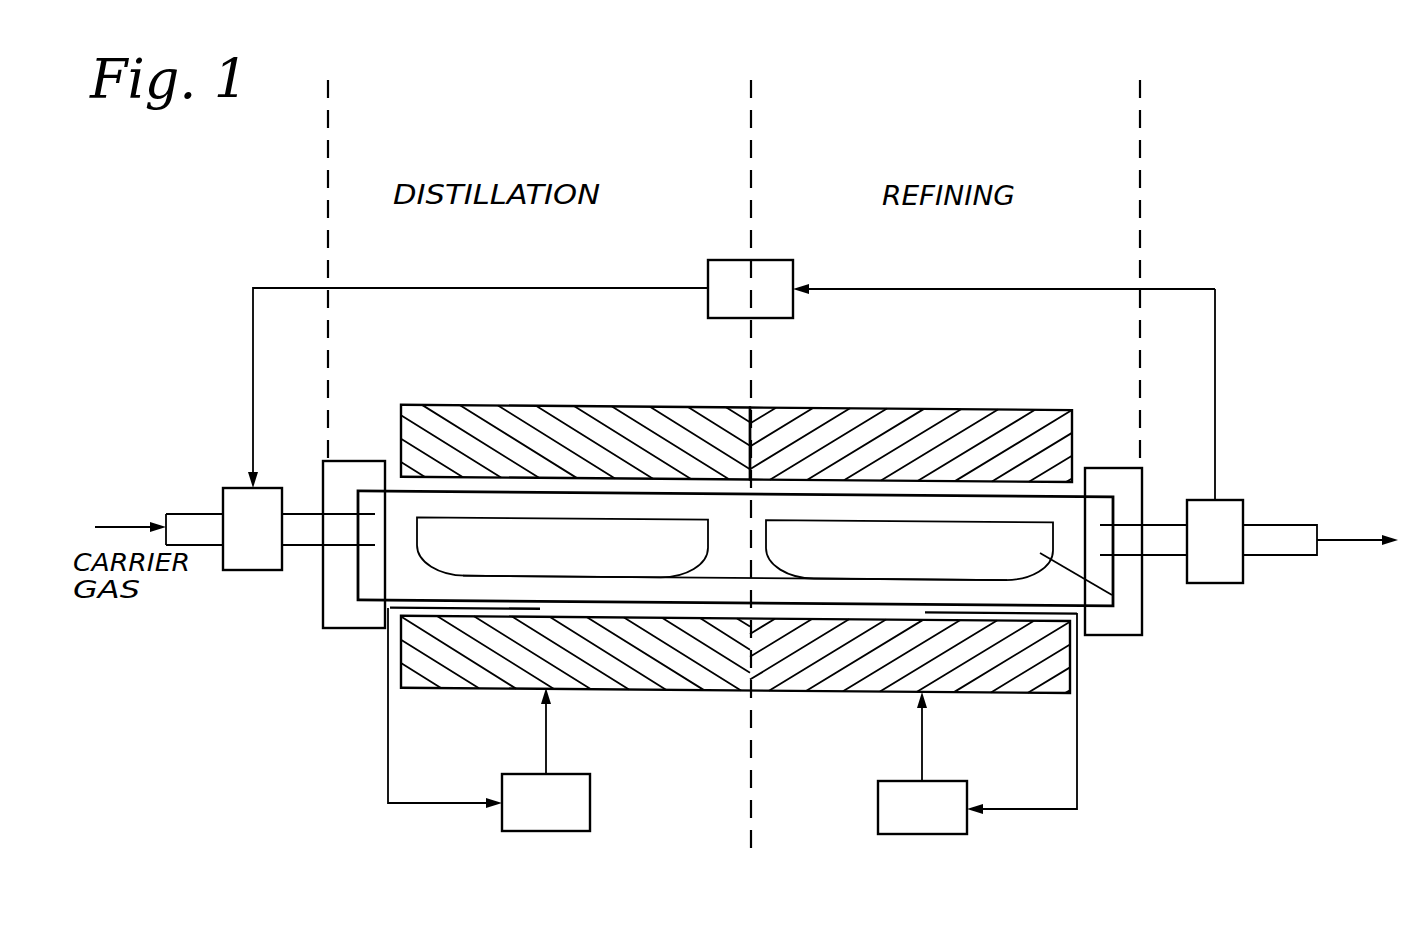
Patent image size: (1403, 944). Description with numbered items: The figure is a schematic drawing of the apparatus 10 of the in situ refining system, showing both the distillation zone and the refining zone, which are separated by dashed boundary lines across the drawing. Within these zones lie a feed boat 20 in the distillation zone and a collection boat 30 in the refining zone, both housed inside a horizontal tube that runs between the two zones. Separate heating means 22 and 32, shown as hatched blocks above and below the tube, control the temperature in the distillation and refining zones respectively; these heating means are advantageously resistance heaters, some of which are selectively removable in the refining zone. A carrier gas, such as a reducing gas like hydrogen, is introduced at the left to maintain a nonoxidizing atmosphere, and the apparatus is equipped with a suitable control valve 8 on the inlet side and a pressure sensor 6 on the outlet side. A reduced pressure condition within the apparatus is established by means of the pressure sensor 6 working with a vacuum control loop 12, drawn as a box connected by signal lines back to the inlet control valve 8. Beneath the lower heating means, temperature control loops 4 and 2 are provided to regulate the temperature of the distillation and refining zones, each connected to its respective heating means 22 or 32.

The temperature control loop 2 is at (918, 834).
The temperature control loop 4 is at (523, 831).
The pressure sensor 6 is at (1243, 583).
The control valve 8 is at (253, 570).
The apparatus 10 is at (350, 591).
The vacuum control loop 12 is at (715, 260).
The feed boat 20 is at (432, 564).
The heating means 22 is at (478, 407).
The collection boat 30 is at (1112, 595).
The heating means 32 is at (816, 407).